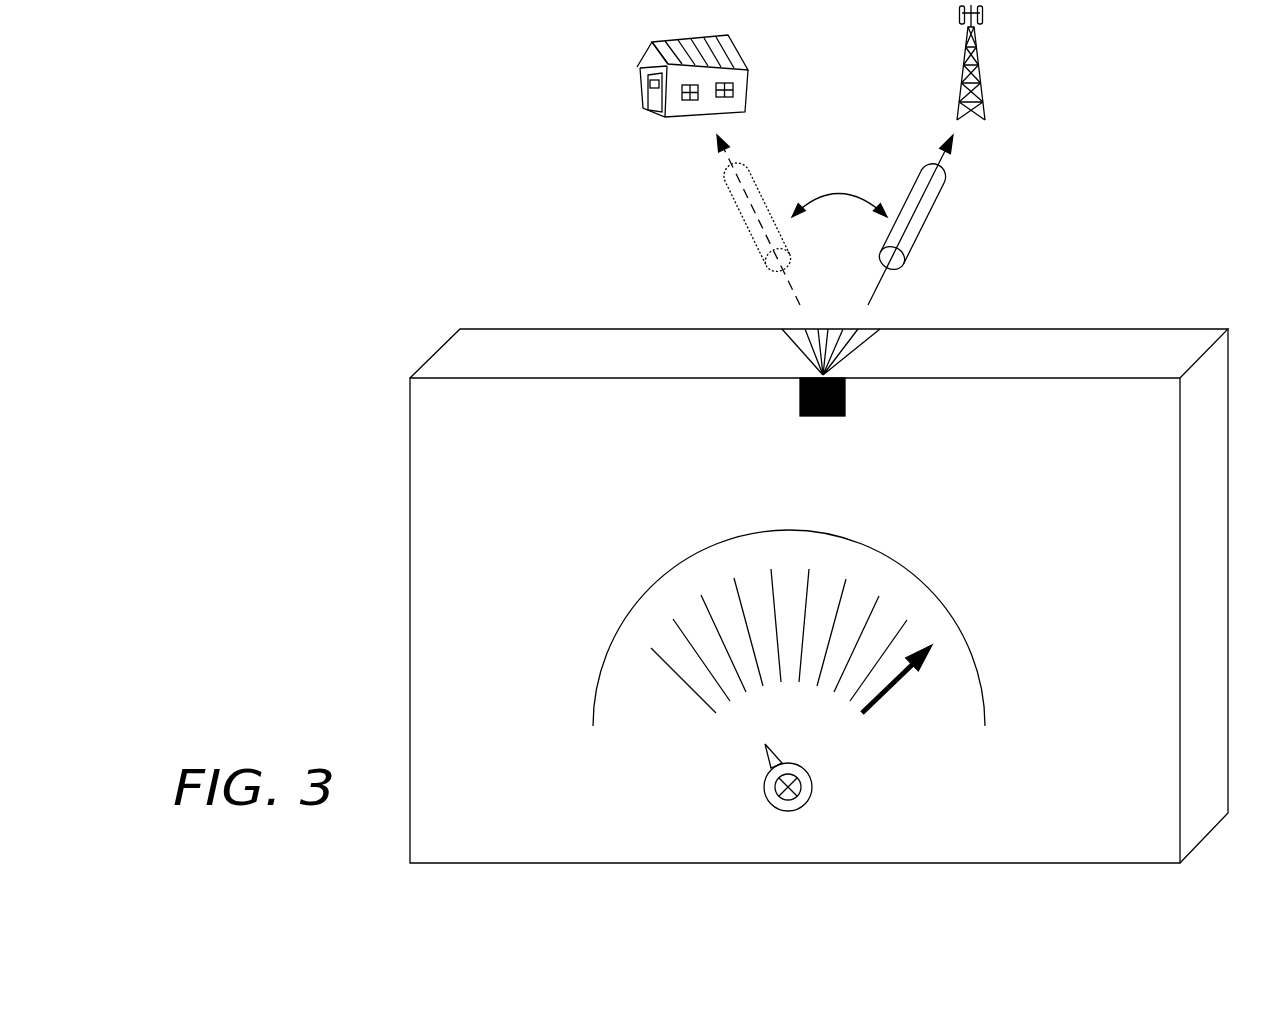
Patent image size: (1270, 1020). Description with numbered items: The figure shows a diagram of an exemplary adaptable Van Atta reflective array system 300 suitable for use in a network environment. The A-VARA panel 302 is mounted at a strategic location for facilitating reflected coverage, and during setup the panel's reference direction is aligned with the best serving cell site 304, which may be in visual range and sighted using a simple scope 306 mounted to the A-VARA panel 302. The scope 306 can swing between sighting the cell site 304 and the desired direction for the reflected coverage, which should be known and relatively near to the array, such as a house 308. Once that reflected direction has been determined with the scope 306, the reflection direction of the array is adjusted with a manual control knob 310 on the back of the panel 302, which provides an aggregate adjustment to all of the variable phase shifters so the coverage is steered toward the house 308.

The adaptable Van Atta reflective array (A-VARA) system 300 is at (283, 148).
The A-VARA panel 302 is at (967, 329).
The cell site 304 is at (995, 66).
The scope 306 is at (933, 220).
The house 308 is at (622, 86).
The manual control knob 310 is at (818, 786).